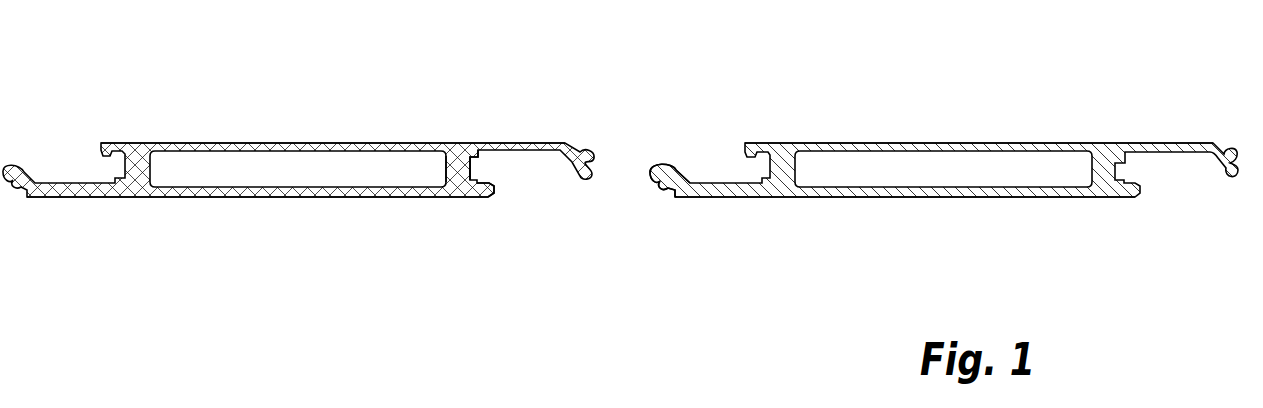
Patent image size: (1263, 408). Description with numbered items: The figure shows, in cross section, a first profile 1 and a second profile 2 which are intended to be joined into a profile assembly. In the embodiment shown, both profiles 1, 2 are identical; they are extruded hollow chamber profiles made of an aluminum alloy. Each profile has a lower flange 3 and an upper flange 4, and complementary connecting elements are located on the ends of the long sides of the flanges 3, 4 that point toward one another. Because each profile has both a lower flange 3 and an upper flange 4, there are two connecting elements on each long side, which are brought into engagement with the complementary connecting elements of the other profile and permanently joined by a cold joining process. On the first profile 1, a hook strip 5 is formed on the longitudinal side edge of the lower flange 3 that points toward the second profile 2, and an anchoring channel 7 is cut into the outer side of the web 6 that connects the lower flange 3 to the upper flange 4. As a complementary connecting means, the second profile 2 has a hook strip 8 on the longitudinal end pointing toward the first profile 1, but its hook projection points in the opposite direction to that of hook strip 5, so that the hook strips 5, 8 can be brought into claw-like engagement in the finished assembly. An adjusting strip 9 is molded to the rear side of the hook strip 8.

The first profile 1 is at (342, 132).
The second profile 2 is at (982, 127).
The lower flange 3 is at (272, 195).
The upper flange 4 is at (397, 138).
The hook strip 5 is at (482, 198).
The web 6 is at (457, 173).
The anchoring channel 7 is at (475, 172).
The hook strip 8 is at (675, 175).
The adjusting strip 9 is at (654, 162).